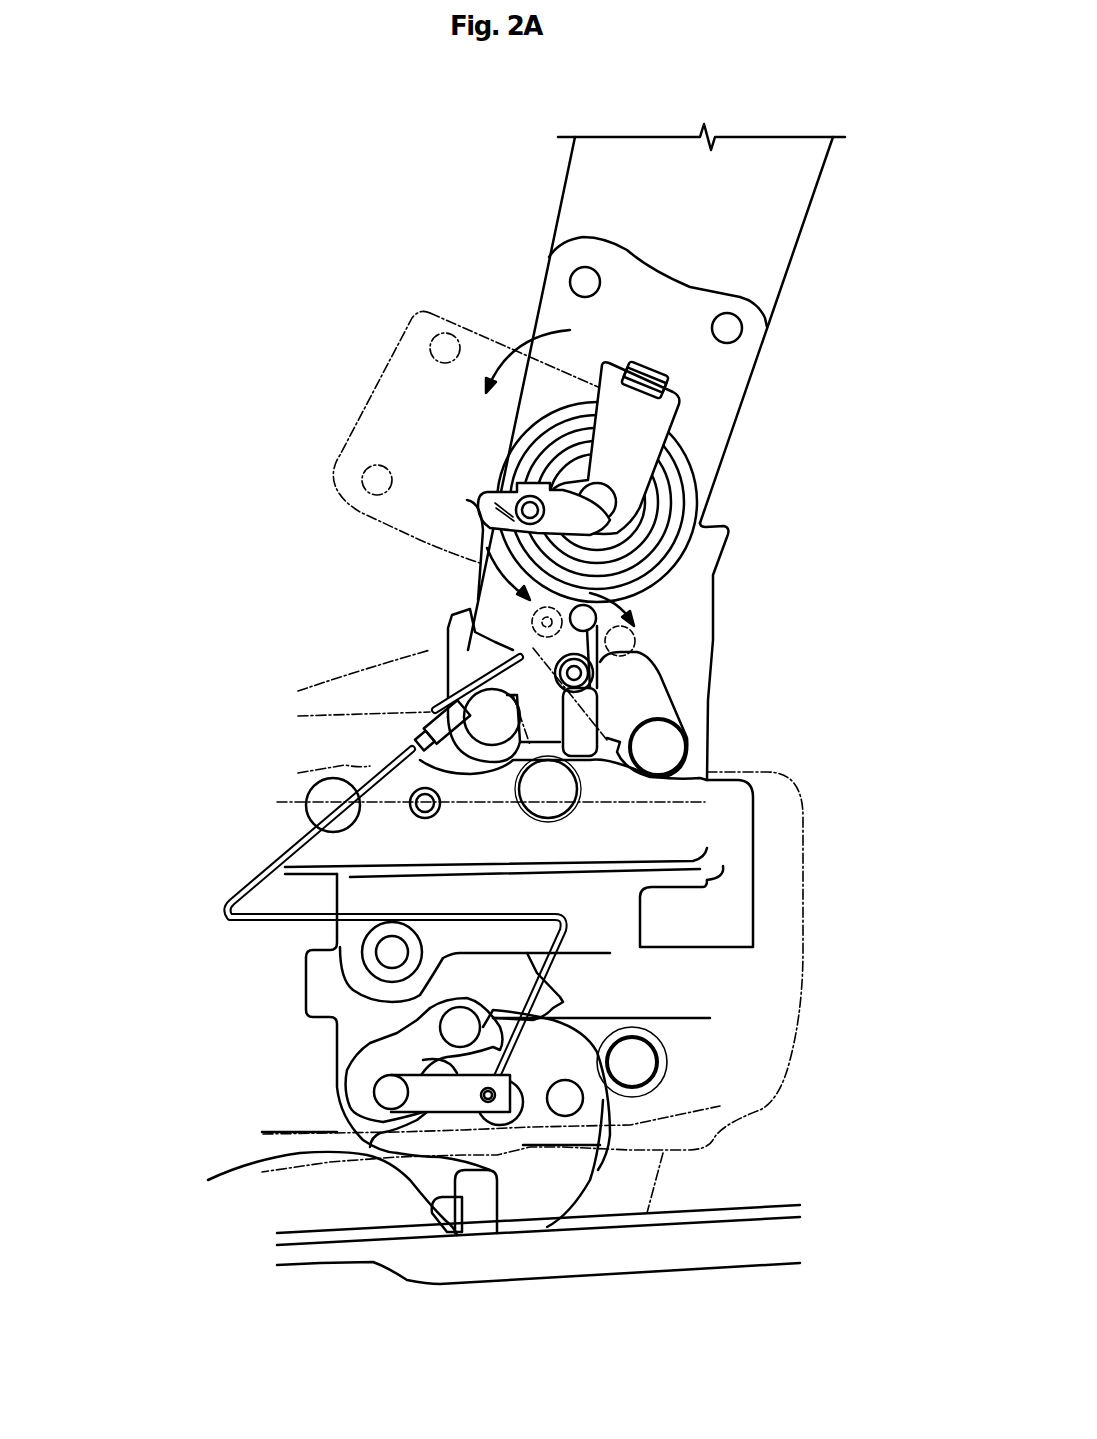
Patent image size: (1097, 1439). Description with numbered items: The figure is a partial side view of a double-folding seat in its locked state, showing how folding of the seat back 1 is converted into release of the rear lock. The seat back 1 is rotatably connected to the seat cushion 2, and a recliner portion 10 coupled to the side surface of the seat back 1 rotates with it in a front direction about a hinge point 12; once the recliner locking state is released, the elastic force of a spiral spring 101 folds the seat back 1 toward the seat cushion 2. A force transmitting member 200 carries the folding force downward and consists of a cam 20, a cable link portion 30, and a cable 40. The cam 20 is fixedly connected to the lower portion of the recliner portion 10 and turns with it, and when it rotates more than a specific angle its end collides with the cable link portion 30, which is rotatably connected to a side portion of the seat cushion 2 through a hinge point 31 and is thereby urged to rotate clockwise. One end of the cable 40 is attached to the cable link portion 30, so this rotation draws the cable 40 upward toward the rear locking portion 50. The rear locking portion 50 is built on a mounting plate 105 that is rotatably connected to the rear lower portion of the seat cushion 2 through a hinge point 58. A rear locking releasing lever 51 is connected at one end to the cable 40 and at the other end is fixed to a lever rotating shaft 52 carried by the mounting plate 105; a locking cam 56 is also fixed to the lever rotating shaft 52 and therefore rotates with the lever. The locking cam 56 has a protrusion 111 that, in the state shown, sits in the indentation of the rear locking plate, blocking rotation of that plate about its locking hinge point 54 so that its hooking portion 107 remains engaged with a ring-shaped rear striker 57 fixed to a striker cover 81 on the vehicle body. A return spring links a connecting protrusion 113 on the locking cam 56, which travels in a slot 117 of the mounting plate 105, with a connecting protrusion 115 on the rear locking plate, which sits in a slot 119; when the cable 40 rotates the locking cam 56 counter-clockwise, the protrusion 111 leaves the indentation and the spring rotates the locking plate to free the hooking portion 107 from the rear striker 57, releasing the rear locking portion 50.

The seat back 1 is at (806, 215).
The seat cushion 2 is at (683, 820).
The recliner portion 10 is at (548, 279).
The hinge point 12 is at (607, 507).
The cam 20 is at (478, 572).
The cable link portion 30 is at (560, 644).
The hinge point 31 is at (600, 652).
The cable 40 is at (383, 773).
The rear locking portion 50 is at (288, 1110).
The rear locking releasing lever 51 is at (440, 1100).
The lever rotating shaft 52 is at (380, 1090).
The locking hinge point 54 is at (503, 1125).
The locking cam 56 is at (410, 1047).
The rear striker 57 is at (482, 1223).
The hinge point 58 is at (375, 948).
The striker cover 81 is at (320, 1265).
The spiral spring 101 is at (697, 500).
The mounting plate 105 is at (403, 1178).
The hooking portion 107 is at (435, 1215).
The protrusion 111 is at (590, 1060).
The connecting protrusion 113 is at (447, 1028).
The connecting protrusion 115 is at (568, 1108).
The slot 117 is at (420, 1005).
The slot 119 is at (710, 1018).
The force transmitting member 200 is at (212, 737).